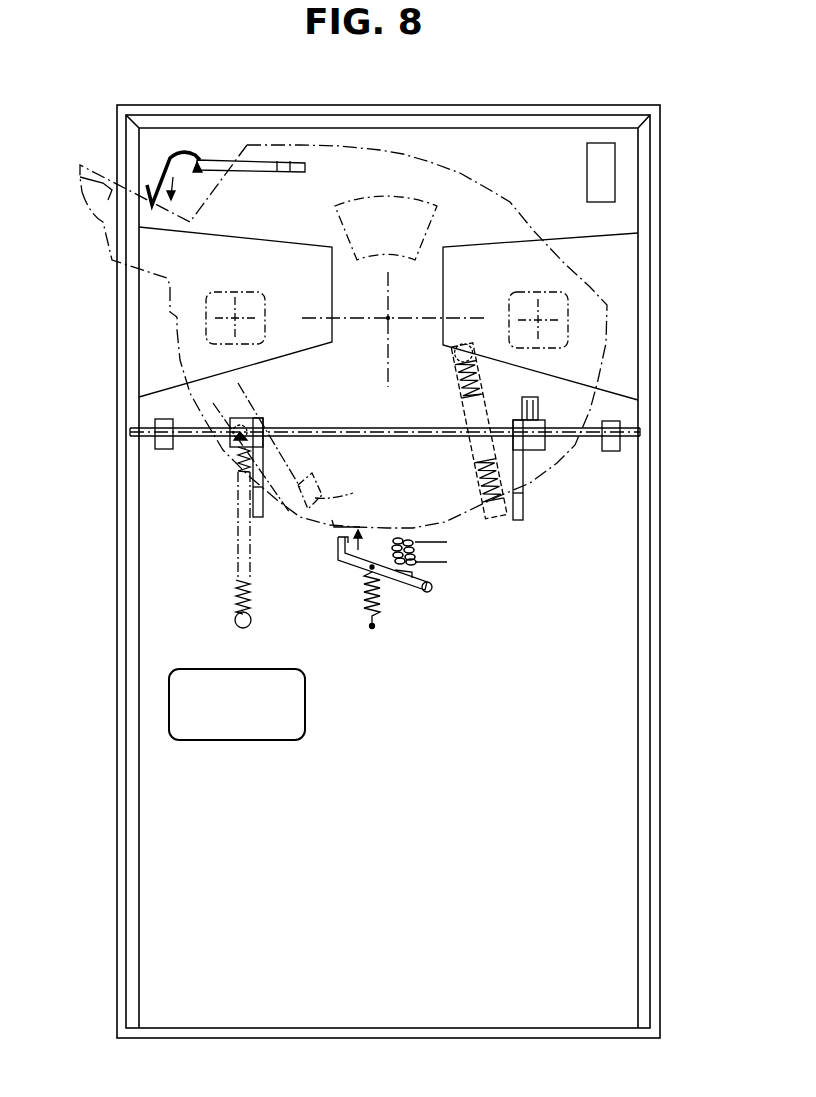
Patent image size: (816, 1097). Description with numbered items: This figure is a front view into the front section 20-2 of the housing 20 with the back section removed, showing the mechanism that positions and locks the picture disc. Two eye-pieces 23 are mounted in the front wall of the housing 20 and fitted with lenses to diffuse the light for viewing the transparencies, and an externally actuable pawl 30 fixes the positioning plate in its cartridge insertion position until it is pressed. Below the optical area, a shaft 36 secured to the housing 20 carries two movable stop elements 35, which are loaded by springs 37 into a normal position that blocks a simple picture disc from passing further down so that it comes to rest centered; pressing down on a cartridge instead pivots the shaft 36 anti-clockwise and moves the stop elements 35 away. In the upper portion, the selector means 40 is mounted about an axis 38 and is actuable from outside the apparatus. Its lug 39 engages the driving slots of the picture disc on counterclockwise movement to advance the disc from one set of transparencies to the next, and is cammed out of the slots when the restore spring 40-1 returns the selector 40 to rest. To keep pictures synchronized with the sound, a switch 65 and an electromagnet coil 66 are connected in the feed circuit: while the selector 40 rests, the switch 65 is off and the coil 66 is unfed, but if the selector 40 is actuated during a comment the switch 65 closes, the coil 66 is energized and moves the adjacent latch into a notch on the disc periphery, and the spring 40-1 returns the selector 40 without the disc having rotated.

The housing 20 is at (663, 628).
The front section 20-2 is at (642, 713).
The eye-pieces 23 is at (258, 297).
The pawl means 30 is at (603, 172).
The stop elements 35 is at (257, 495).
The shaft 36 is at (426, 438).
The springs 37 is at (238, 568).
The axis 38 is at (383, 322).
The lug 39 is at (325, 481).
The selector means 40 is at (455, 182).
The restore spring 40-1 is at (468, 412).
The switch 65 is at (253, 172).
The electromagnet coil 66 is at (437, 562).